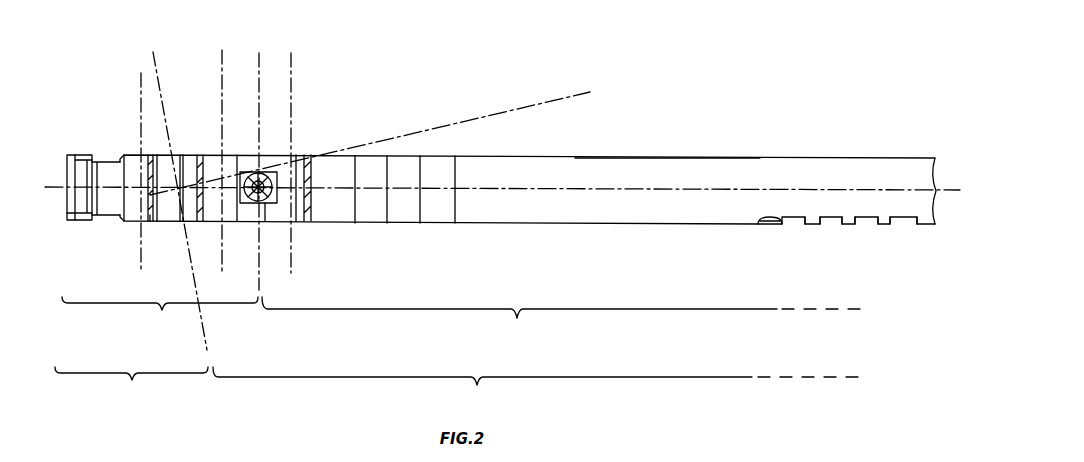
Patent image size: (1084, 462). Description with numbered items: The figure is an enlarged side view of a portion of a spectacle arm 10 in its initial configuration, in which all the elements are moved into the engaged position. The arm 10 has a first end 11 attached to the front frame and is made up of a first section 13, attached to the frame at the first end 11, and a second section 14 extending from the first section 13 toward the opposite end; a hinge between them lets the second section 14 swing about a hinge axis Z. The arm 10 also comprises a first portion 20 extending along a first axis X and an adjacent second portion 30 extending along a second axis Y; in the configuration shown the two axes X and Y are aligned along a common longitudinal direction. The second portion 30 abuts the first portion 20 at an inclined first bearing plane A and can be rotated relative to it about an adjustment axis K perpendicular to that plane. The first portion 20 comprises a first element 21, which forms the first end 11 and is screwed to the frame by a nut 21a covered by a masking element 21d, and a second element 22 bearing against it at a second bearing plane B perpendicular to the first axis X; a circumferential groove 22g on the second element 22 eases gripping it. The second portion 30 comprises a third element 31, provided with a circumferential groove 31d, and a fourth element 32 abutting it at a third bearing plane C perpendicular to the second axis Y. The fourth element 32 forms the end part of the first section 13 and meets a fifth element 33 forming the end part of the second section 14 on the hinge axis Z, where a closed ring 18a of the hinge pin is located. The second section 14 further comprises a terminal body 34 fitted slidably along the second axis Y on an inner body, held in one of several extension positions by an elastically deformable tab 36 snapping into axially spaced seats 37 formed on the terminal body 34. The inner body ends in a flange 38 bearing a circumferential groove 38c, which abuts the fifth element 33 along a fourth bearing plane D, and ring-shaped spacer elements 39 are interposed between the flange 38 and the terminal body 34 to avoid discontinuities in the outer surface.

The arm 10 is at (704, 98).
The first end 11 is at (110, 222).
The first section 13 is at (133, 303).
The second section 14 is at (609, 306).
The closed ring 18a is at (256, 206).
The first portion 20 is at (150, 372).
The first element 21 is at (126, 155).
The nut 21a is at (83, 153).
The masking element 21d is at (72, 221).
The second element 22 is at (150, 155).
The circumferential groove 22g is at (150, 221).
The second portion 30 is at (630, 375).
The third element 31 is at (173, 155).
The circumferential groove 31d is at (199, 155).
The fourth element 32 is at (238, 155).
The fifth element 33 is at (265, 155).
The terminal body 34 is at (655, 157).
The elastically deformable tab 36 is at (772, 225).
The seats 37 is at (905, 225).
The flange 38 is at (300, 222).
The circumferential groove 38c is at (296, 155).
The ring-shaped spacer elements 39 is at (451, 162).
The first axis X is at (57, 179).
The second axis Y is at (575, 157).
The adjustment axis K is at (505, 108).
The first bearing plane A is at (158, 82).
The second bearing plane B is at (141, 88).
The third bearing plane C is at (222, 88).
The hinge axis Z is at (260, 72).
The fourth bearing plane D is at (292, 72).